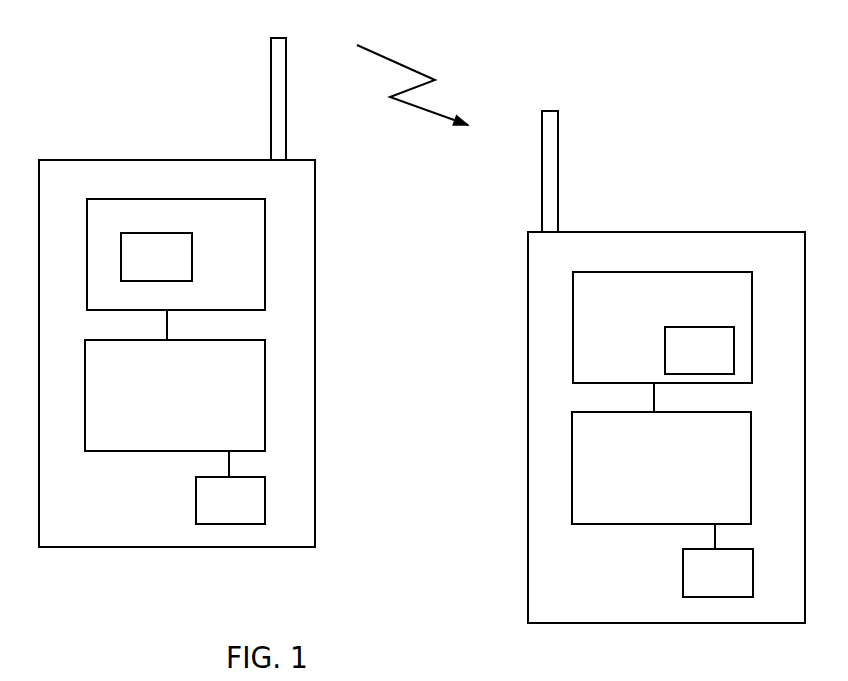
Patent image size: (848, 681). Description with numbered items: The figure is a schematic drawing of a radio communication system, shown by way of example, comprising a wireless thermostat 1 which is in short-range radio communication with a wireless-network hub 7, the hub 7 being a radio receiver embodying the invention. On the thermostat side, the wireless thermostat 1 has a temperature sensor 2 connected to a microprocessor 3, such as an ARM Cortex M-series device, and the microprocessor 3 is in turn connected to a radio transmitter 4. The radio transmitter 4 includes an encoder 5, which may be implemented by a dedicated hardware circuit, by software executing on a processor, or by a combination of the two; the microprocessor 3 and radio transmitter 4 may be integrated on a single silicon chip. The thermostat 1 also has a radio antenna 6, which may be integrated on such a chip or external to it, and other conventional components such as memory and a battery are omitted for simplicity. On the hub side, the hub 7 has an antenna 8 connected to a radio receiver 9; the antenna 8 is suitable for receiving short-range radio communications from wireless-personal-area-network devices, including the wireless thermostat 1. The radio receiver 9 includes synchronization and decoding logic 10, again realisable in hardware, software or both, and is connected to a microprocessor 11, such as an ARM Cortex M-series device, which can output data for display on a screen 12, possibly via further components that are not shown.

The wireless thermostat 1 is at (103, 160).
The temperature sensor 2 is at (240, 517).
The microprocessor 3 is at (183, 413).
The radio transmitter 4 is at (266, 255).
The encoder 5 is at (166, 272).
The radio antenna 6 is at (271, 78).
The wireless-network hub 7 is at (528, 595).
The antenna 8 is at (558, 126).
The radio receiver 9 is at (573, 327).
The synchronization and decoding logic 10 is at (717, 366).
The microprocessor 11 is at (677, 485).
The screen 12 is at (734, 588).